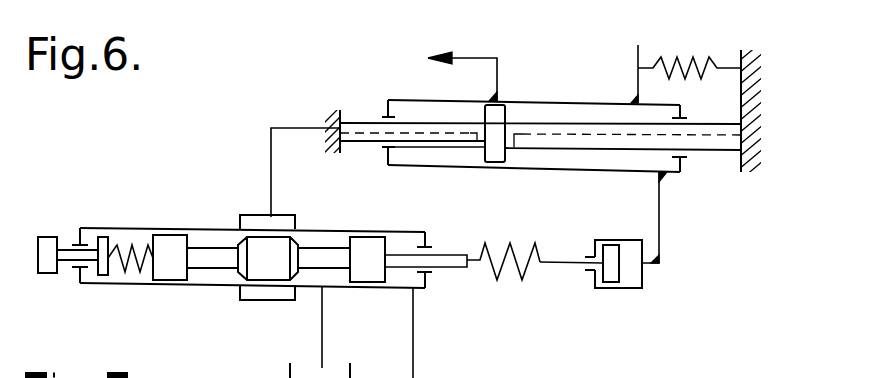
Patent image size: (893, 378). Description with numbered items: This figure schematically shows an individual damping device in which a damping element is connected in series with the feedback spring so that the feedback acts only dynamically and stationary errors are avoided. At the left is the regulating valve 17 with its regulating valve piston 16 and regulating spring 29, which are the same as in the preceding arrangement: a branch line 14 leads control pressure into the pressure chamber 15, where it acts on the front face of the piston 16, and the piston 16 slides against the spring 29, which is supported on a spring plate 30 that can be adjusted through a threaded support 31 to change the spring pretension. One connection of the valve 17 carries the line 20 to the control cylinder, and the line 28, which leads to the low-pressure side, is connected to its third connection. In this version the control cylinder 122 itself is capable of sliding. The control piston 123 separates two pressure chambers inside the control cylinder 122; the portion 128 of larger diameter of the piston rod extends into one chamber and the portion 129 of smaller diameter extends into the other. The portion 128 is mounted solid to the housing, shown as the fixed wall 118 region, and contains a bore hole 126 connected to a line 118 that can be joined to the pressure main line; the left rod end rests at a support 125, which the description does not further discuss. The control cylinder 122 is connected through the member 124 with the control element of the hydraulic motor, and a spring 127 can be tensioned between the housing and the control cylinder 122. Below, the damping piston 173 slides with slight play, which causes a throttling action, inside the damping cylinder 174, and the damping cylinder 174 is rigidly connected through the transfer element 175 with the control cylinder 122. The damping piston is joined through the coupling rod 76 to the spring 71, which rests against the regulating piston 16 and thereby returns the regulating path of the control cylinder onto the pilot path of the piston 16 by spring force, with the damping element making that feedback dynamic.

The branch line 14 is at (413, 345).
The pressure chamber 15 is at (403, 282).
The regulating valve piston 16 is at (270, 270).
The regulating valve 17 is at (282, 215).
The line 20 is at (271, 160).
The line 28 is at (322, 343).
The spring 29 is at (130, 245).
The spring plate 30 is at (100, 237).
The threaded support 31 is at (67, 262).
The spring 71 is at (519, 238).
The coupling rod 76 is at (562, 265).
The line 118 is at (773, 128).
The control cylinder 122 is at (424, 167).
The control piston 123 is at (497, 162).
The member 124 is at (470, 58).
The fixed support 125 is at (373, 127).
The bore hole 126 is at (592, 135).
The spring 127 is at (700, 57).
The portion of larger diameter of the piston rod 128 is at (712, 152).
The portion of smaller diameter of the piston rod 129 is at (360, 143).
The damping piston 173 is at (612, 253).
The damping cylinder 174 is at (627, 290).
The transfer element 175 is at (660, 228).